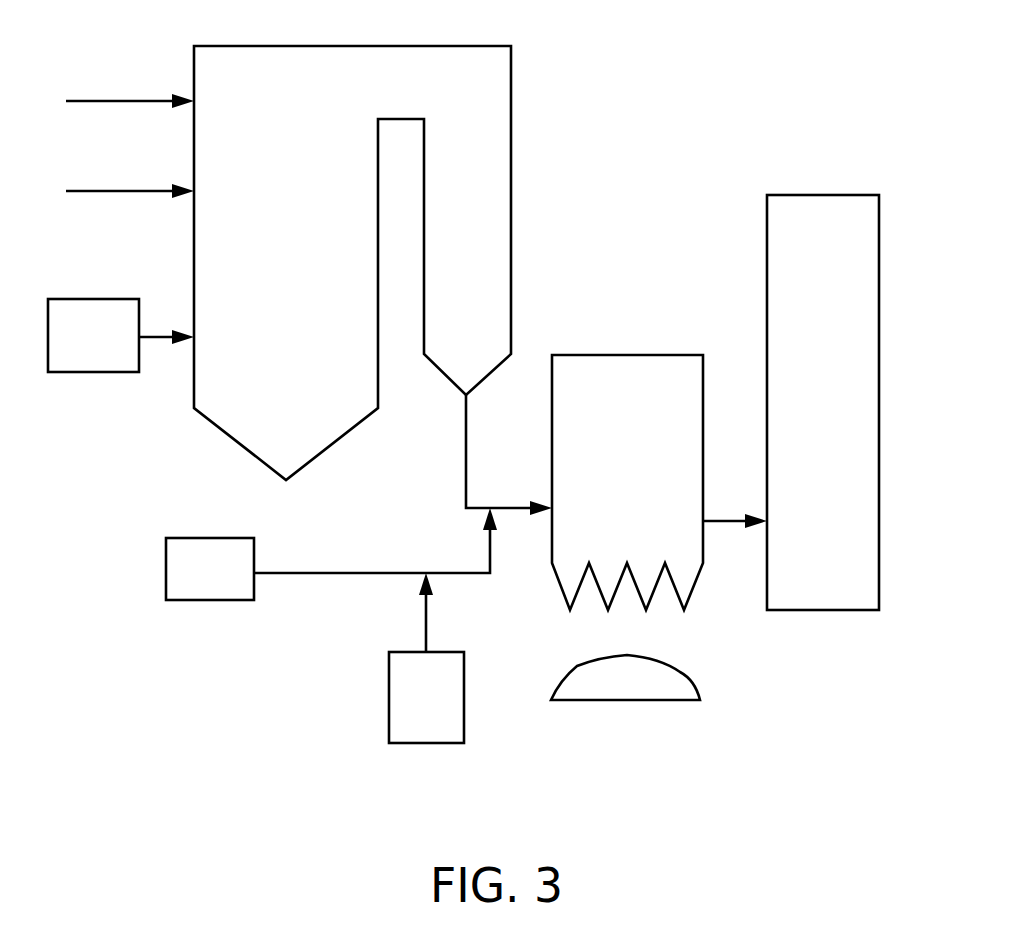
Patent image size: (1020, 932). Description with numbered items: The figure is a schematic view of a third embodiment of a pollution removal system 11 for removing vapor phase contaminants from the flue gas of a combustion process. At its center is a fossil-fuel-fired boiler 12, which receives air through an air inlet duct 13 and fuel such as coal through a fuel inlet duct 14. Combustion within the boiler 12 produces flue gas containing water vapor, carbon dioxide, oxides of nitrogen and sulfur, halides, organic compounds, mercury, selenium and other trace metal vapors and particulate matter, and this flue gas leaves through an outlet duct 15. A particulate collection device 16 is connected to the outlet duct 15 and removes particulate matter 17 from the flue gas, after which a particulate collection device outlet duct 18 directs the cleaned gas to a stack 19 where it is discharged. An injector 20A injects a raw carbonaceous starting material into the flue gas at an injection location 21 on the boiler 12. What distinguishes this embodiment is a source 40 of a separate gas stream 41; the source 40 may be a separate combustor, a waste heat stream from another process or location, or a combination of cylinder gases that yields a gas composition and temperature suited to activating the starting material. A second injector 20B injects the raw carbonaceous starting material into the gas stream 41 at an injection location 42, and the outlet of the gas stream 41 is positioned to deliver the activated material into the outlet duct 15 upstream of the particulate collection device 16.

The pollution removal system 11 is at (652, 162).
The fossil-fuel-fired boiler 12 is at (271, 474).
The air inlet duct 13 is at (133, 100).
The fuel inlet duct 14 is at (133, 190).
The outlet duct 15 is at (465, 440).
The particulate collection device 16 is at (593, 353).
The particulate matter 17 is at (680, 675).
The particulate collection device outlet duct 18 is at (705, 518).
The stack 19 is at (880, 250).
The injection location 21 is at (196, 333).
The injector 20A is at (108, 372).
The second injector 20B is at (433, 743).
The source 40 is at (230, 600).
The gas stream 41 is at (353, 575).
The injection location 42 is at (426, 572).